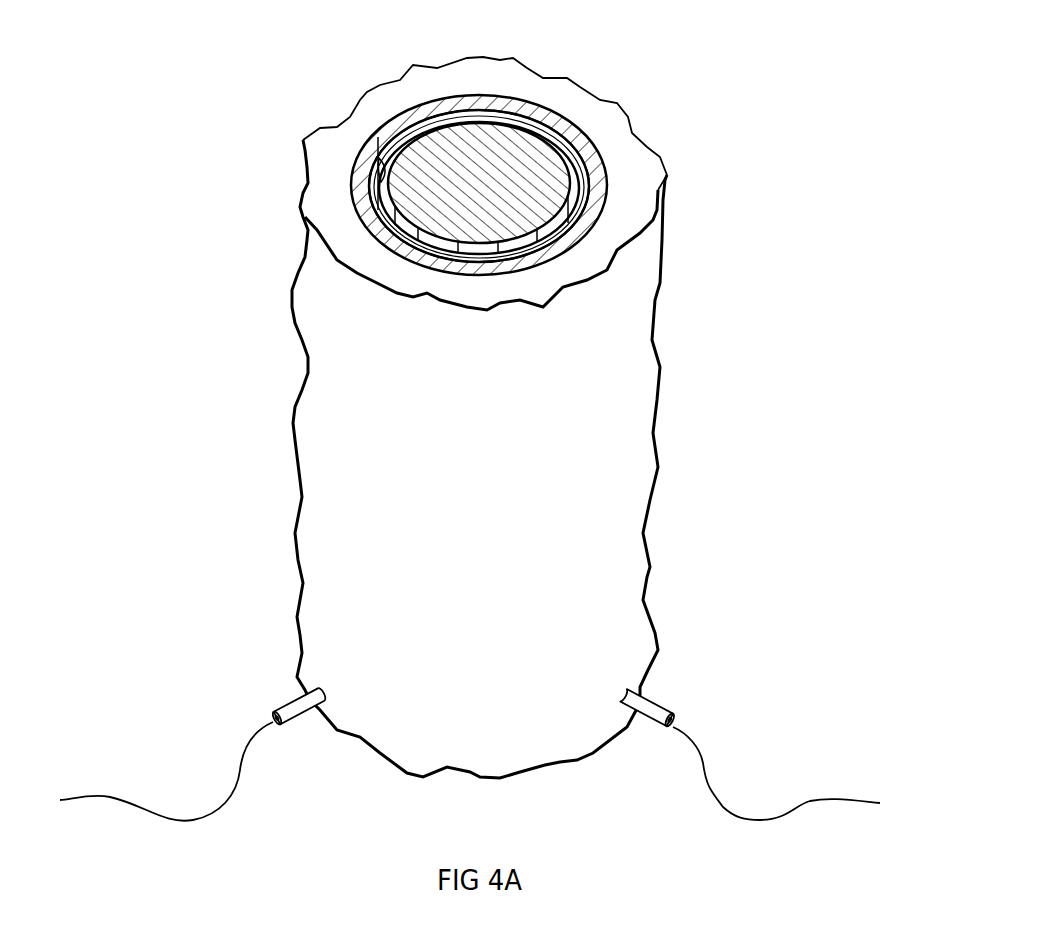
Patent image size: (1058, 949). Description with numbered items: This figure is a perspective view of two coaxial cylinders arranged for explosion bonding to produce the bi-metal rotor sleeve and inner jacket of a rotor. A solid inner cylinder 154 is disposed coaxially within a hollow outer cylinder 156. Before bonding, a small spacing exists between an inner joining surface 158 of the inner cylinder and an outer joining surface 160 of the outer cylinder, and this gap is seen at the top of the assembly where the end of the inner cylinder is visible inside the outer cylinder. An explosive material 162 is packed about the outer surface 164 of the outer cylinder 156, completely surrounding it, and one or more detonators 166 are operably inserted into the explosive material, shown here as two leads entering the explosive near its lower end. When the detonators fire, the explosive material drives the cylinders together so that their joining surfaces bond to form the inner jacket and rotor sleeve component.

The solid inner cylinder 154 is at (517, 132).
The hollow outer cylinder 156 is at (583, 133).
The inner joining surface 158 is at (577, 173).
The outer joining surface 160 is at (383, 165).
The explosive material 162 is at (303, 192).
The outer surface 164 is at (357, 220).
The detonators 166 is at (290, 702).